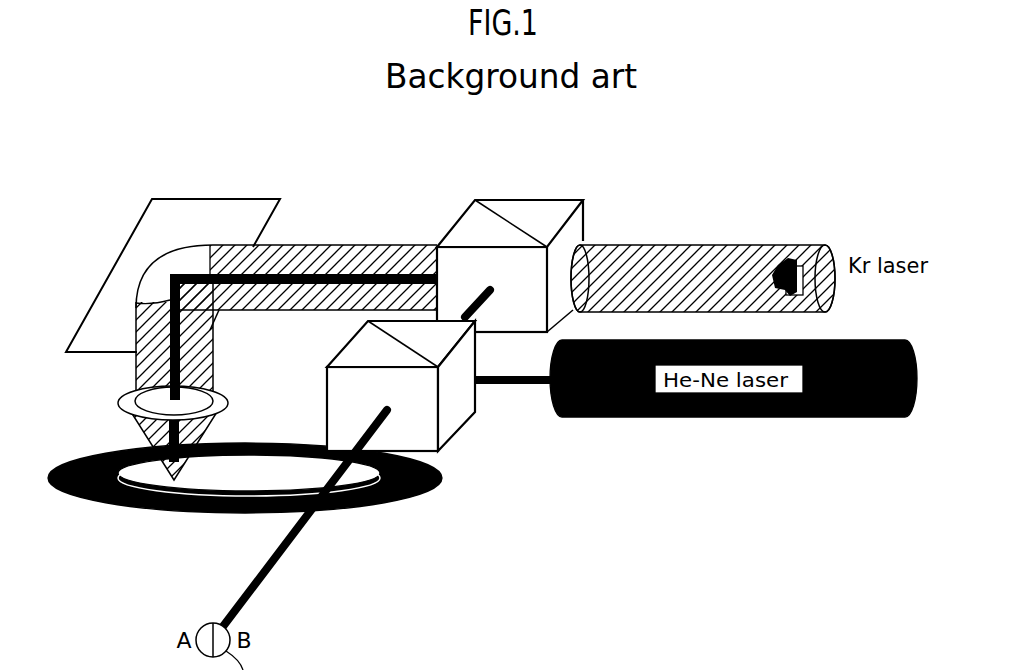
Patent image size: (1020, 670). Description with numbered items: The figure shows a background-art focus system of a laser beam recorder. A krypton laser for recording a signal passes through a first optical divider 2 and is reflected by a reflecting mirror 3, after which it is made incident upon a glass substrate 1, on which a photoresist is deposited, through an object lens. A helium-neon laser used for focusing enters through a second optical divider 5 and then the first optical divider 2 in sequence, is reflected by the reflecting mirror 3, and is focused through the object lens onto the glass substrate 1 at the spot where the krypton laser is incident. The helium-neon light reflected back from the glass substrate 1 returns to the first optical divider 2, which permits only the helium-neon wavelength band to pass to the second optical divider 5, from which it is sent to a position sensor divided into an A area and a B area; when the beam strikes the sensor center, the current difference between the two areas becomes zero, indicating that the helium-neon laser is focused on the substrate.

The glass substrate 1 is at (236, 482).
The first optical divider 2 is at (539, 210).
The reflecting mirror 3 is at (215, 206).
The second optical divider 5 is at (456, 418).